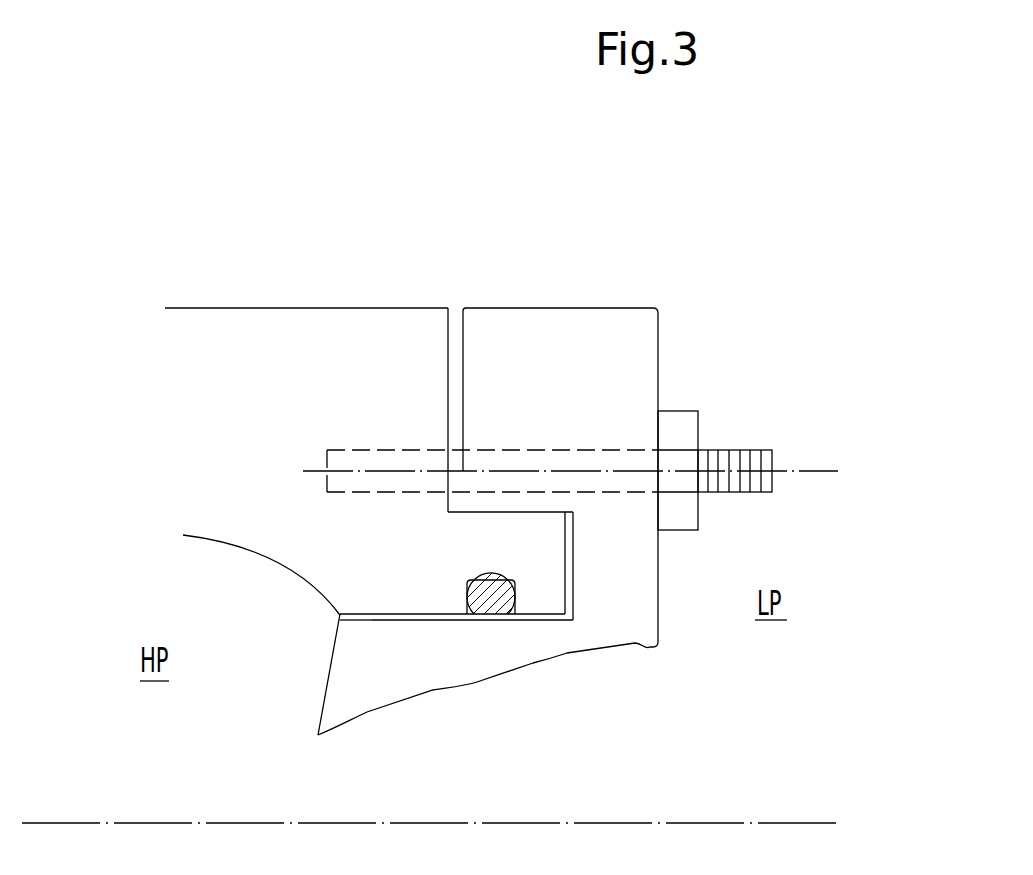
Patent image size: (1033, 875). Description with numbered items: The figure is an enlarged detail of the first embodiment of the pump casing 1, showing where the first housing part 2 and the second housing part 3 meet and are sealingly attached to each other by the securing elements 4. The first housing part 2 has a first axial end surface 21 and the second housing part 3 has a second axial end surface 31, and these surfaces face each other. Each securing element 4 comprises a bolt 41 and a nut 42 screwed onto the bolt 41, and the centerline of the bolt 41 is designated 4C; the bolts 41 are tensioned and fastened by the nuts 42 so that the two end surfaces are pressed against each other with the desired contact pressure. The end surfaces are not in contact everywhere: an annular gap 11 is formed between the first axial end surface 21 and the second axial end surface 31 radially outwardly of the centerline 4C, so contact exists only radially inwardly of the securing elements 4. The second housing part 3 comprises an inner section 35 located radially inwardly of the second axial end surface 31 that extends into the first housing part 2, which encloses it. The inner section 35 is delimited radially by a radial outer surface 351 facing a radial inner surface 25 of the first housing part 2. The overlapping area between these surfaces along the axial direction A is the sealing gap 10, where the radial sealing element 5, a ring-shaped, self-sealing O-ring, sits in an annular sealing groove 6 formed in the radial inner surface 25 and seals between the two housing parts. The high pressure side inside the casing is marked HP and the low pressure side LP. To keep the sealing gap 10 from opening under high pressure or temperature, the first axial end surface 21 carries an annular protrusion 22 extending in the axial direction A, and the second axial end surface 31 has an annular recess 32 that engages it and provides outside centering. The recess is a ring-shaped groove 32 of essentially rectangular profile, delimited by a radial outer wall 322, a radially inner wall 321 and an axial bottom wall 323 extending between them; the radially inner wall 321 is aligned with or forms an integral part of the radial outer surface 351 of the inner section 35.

The pump casing 1 is at (204, 182).
The first housing part 2 is at (273, 338).
The second housing part 3 is at (635, 332).
The securing element 4 is at (698, 387).
The radial sealing element 5 is at (493, 620).
The annular sealing groove 6 is at (513, 578).
The sealing gap 10 is at (340, 616).
The annular gap 11 is at (453, 413).
The first axial end surface 21 is at (448, 335).
The annular protrusion 22 is at (508, 500).
The radial inner surface 25 is at (370, 618).
The second axial end surface 31 is at (463, 375).
The annular recess 32 is at (583, 620).
The inner section 35 is at (345, 688).
The bolt 41 is at (740, 450).
The nut 42 is at (700, 508).
The radially inner wall 321 is at (543, 620).
The radial outer wall 322 is at (545, 512).
The axial bottom wall 323 is at (577, 547).
The radial outer surface 351 is at (412, 613).
The centerline 4C is at (823, 477).
The axial direction A is at (85, 825).